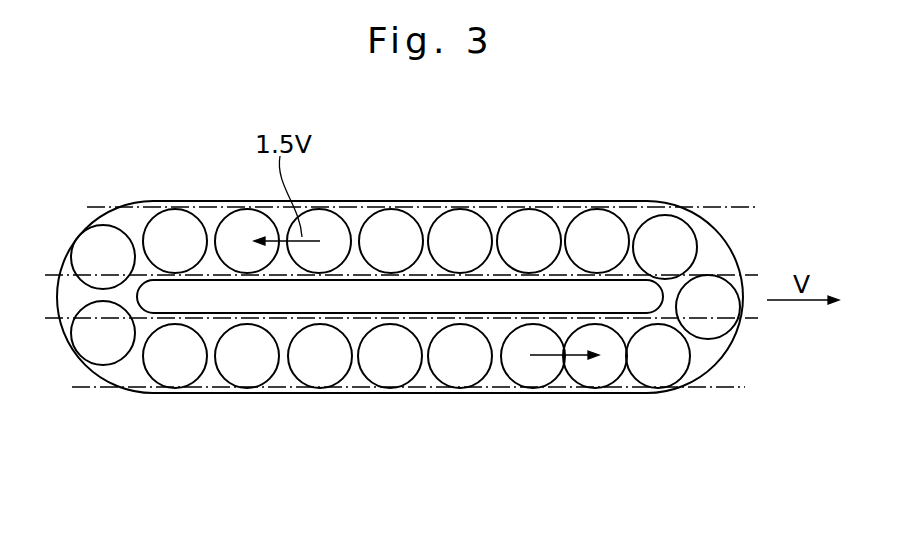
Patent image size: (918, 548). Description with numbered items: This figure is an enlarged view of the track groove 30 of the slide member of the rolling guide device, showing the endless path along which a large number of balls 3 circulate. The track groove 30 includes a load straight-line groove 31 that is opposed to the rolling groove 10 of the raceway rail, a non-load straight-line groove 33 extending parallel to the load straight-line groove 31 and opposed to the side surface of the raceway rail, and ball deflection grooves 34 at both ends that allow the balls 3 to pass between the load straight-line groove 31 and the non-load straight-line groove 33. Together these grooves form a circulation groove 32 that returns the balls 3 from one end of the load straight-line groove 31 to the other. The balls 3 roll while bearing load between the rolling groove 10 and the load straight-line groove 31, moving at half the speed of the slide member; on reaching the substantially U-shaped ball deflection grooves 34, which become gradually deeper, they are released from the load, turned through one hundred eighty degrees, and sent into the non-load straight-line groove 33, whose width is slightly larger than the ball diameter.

The balls 3 is at (472, 232).
The rolling groove 10 is at (746, 212).
The track groove 30 is at (619, 193).
The load straight-line groove 31 is at (385, 210).
The circulation groove 32 is at (232, 400).
The non-load straight-line groove 33 is at (332, 383).
The ball deflection groove 34 is at (78, 244).